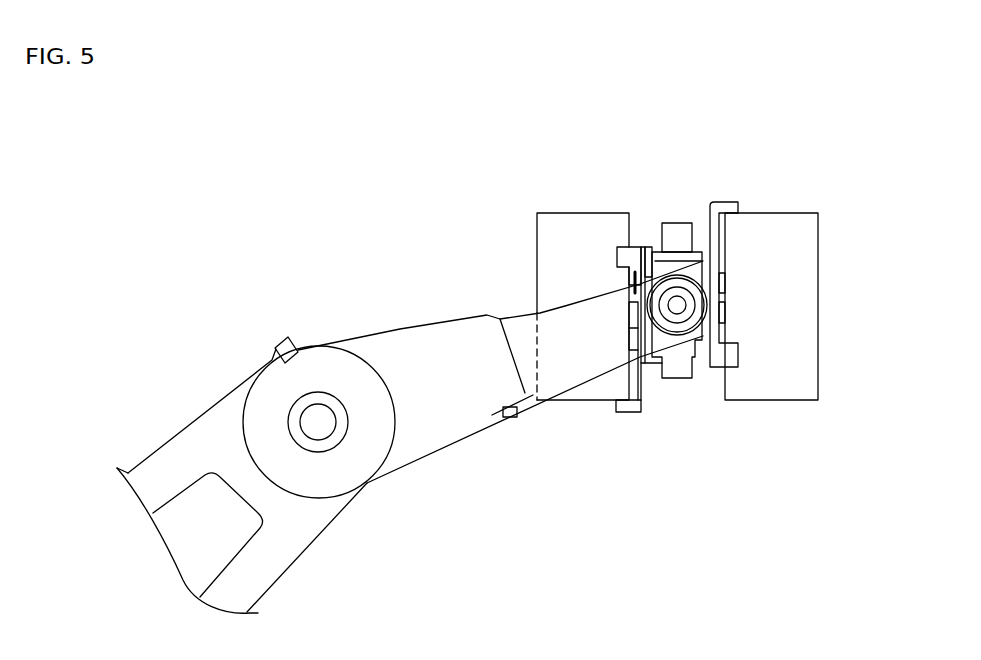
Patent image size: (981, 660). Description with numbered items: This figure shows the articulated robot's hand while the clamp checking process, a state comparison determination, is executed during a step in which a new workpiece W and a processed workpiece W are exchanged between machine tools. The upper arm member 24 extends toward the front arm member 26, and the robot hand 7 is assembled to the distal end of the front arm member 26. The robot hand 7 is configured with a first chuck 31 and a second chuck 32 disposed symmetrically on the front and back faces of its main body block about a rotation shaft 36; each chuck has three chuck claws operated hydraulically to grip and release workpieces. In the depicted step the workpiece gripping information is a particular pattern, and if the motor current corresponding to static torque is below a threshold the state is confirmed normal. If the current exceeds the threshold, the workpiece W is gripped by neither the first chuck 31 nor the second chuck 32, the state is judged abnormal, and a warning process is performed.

The robot hand 7 is at (675, 222).
The upper arm member 24 is at (212, 425).
The front arm member 26 is at (430, 342).
The first chuck 31 is at (725, 242).
The second chuck 32 is at (627, 279).
The rotation shaft 36 is at (683, 348).
The workpiece W is at (587, 388).